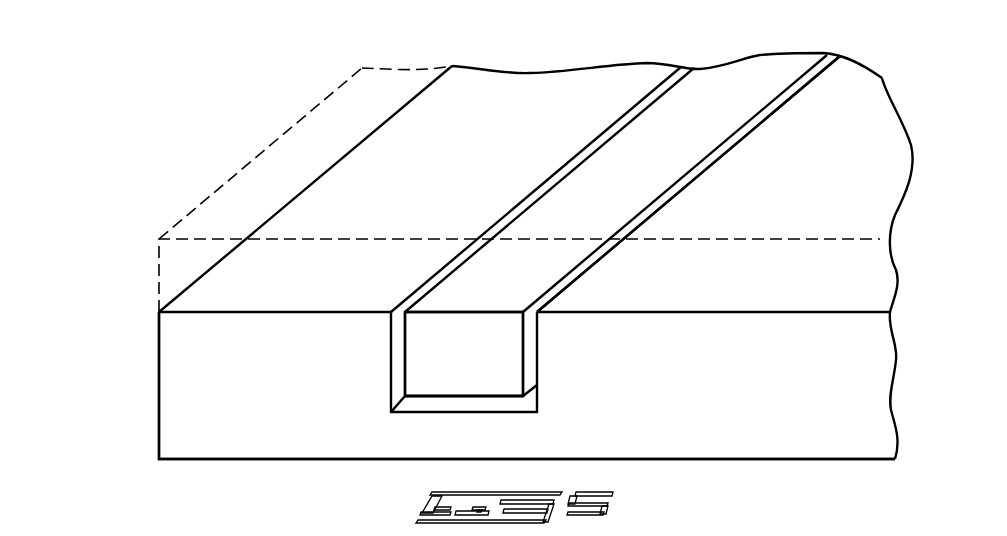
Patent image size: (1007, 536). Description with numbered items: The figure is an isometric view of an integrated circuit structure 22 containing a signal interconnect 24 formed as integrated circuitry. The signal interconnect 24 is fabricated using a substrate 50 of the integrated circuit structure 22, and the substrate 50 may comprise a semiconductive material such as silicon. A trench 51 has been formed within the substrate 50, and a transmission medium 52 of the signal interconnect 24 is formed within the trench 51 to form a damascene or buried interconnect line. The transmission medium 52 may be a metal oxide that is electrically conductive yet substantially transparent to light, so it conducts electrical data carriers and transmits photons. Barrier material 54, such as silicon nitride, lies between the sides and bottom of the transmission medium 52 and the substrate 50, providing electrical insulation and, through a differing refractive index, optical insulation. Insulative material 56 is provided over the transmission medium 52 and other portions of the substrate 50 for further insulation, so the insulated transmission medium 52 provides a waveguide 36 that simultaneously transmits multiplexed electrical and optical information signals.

The integrated circuit structure 22 is at (152, 370).
The signal interconnect 24 is at (760, 123).
The waveguide 36 is at (380, 363).
The substrate 50 is at (731, 389).
The trench 51 is at (537, 364).
The transmission medium 52 is at (480, 369).
The barrier material 54 is at (397, 391).
The insulative material 56 is at (158, 267).